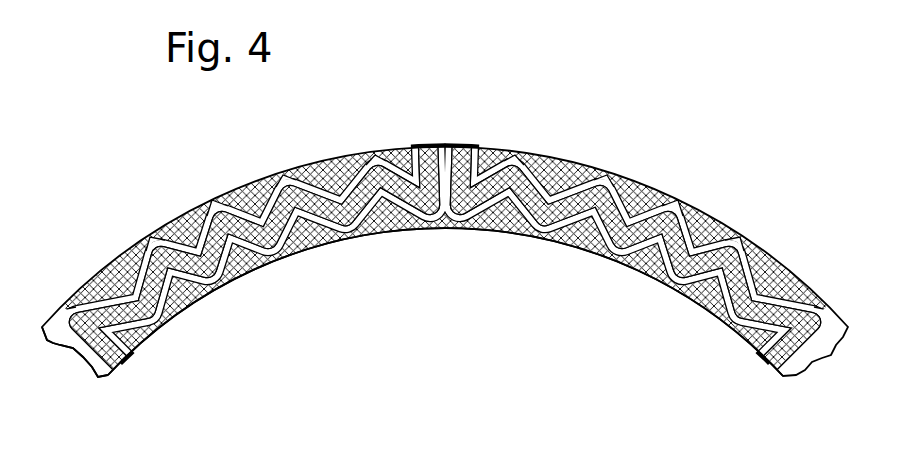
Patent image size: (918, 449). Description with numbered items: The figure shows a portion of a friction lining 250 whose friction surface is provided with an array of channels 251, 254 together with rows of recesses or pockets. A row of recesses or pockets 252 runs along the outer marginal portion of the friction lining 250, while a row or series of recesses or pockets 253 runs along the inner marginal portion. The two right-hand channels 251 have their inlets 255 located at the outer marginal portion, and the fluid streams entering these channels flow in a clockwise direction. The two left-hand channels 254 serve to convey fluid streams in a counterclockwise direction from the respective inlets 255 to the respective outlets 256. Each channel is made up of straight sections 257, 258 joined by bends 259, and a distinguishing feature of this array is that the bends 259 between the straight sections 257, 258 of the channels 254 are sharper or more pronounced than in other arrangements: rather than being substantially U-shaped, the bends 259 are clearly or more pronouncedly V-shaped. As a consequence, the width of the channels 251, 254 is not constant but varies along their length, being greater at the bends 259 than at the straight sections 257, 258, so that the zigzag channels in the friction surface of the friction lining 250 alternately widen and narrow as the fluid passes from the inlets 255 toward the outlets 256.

The friction lining 250 is at (432, 106).
The channels 251 is at (522, 158).
The recesses or pockets 252 is at (572, 162).
The recesses or pockets 253 is at (507, 234).
The channels 254 is at (376, 162).
The inlets 255 is at (240, 200).
The outlets 256 is at (126, 362).
The straight sections 257 is at (240, 237).
The straight sections 258 is at (184, 268).
The bends 259 is at (231, 226).